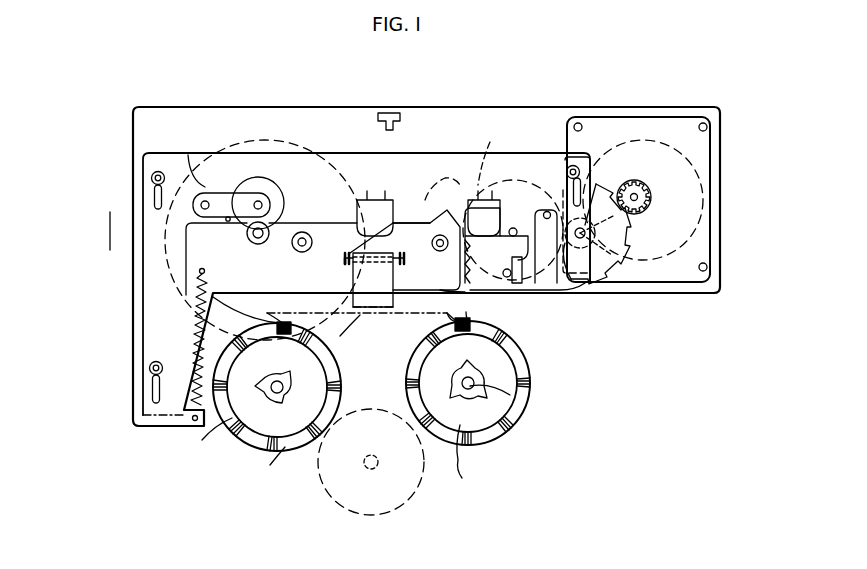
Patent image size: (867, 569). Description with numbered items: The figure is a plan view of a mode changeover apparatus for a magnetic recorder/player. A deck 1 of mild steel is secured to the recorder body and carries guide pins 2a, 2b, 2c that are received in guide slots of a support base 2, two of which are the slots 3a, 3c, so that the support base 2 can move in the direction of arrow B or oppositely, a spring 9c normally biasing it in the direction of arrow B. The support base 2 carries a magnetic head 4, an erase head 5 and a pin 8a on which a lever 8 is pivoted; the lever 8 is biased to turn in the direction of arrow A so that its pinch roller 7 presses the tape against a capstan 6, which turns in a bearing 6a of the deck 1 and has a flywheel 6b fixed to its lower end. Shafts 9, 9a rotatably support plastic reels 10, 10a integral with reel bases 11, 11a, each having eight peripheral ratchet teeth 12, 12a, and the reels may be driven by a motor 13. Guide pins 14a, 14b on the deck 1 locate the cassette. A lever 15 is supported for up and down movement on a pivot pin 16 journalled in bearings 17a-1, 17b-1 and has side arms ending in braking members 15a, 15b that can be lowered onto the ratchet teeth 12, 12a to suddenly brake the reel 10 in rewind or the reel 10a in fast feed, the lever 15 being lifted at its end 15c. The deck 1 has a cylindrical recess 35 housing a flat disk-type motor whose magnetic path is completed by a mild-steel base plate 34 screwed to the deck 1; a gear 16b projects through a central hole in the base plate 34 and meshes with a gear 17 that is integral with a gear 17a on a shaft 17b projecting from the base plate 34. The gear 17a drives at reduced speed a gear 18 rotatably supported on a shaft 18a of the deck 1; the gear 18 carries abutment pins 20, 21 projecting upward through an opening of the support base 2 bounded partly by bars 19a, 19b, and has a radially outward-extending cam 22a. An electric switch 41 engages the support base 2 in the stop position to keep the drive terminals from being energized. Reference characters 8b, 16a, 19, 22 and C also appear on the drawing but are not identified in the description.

The deck 1 is at (463, 107).
The support base 2 is at (426, 153).
The guide pin 2a is at (151, 178).
The guide pin 2b is at (149, 368).
The guide pin 2c is at (579, 172).
The guide slot 3a is at (153, 193).
The guide slot 3c is at (152, 387).
The magnetic head 4 is at (390, 200).
The erase head 5 is at (501, 205).
The capstan 6 is at (260, 244).
The bearing 6a is at (266, 244).
The flywheel 6b is at (285, 140).
The pinch roller 7 is at (270, 190).
The lever 8 is at (220, 193).
The pin 8a is at (205, 223).
The pin 8b is at (228, 222).
The shaft 9 is at (262, 416).
The shaft 9a is at (494, 396).
The spring 9c is at (200, 318).
The reel 10 is at (296, 382).
The reel 10a is at (478, 400).
The reel base 11 is at (210, 443).
The reel base 11a is at (478, 462).
The ratchet teeth 12 is at (270, 470).
The ratchet teeth 12a is at (531, 392).
The motor 13 is at (398, 508).
The guide pin 14a is at (302, 252).
The guide pin 14b is at (438, 252).
The lever 15 is at (360, 313).
The braking member 15a is at (280, 322).
The braking member 15b is at (472, 325).
The end of lever 15c is at (448, 190).
The pivot pin 16 is at (374, 280).
The gear shaft 16a is at (638, 197).
The gear 16b is at (636, 182).
The gear 17 is at (612, 278).
The gear 17a is at (620, 228).
The bearing 17a-1 is at (346, 253).
The shaft 17b is at (612, 243).
The bearing 17b-1 is at (398, 307).
The gear 18 is at (528, 180).
The shaft 18a is at (511, 236).
The slider 19 is at (550, 288).
The bar 19a is at (585, 288).
The bar 19b is at (482, 283).
The abutment pin 20 is at (520, 283).
The abutment pin 21 is at (548, 246).
The pawl 22 is at (458, 326).
The cam 22a is at (496, 153).
The base plate 34 is at (710, 217).
The cylindrical recess 35 is at (700, 162).
The electric switch 41 is at (388, 113).
The arrow A is at (190, 158).
The arrow B is at (110, 232).
The direction C is at (341, 332).